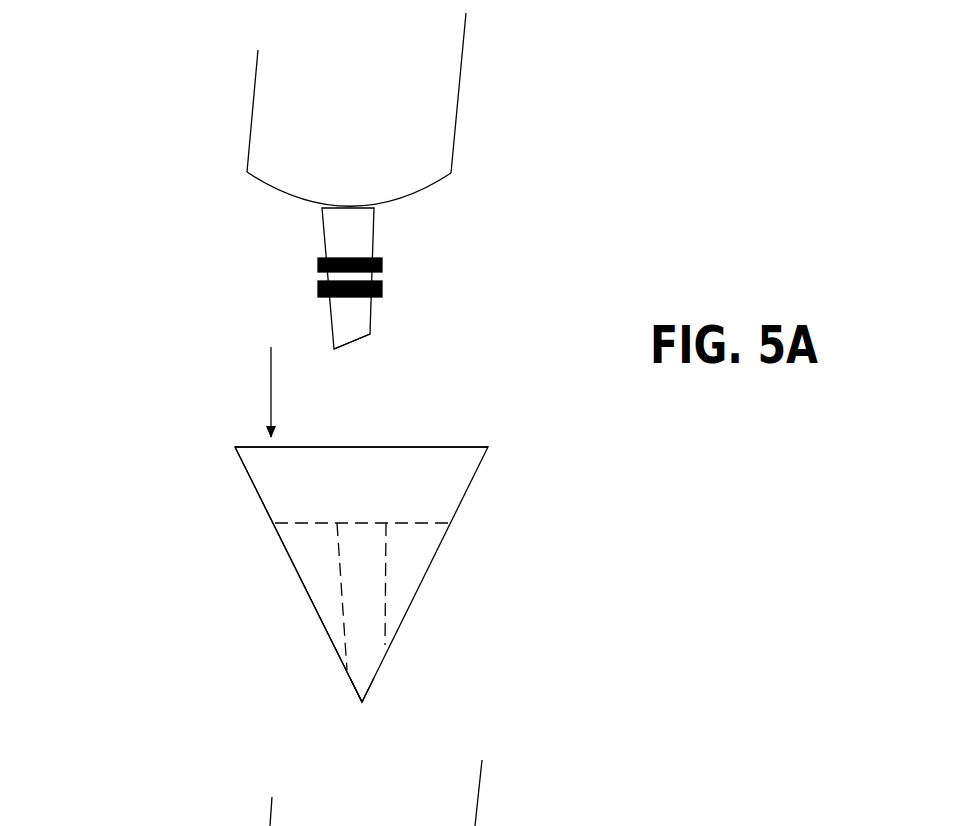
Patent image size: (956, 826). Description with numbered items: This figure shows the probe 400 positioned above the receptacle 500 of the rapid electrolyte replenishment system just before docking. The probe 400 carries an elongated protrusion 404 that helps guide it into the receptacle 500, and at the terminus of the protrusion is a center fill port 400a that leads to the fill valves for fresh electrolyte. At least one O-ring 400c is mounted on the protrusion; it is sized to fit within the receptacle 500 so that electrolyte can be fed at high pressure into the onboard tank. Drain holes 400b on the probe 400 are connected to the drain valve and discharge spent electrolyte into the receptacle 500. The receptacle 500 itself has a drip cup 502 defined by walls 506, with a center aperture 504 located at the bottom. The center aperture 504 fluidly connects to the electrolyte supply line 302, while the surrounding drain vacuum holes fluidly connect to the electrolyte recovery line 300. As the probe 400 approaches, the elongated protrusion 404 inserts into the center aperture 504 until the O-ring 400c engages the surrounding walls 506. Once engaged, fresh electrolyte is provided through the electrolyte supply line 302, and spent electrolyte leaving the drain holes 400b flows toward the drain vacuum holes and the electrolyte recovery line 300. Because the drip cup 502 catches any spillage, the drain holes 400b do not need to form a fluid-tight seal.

The probe 400 is at (508, 96).
The center fill port 400a is at (356, 341).
The drain holes 400b is at (432, 185).
The O-ring 400c is at (305, 277).
The elongated protrusion 404 is at (310, 229).
The receptacle 500 is at (188, 512).
The drip cup 502 is at (424, 477).
The center aperture 504 is at (360, 594).
The walls 506 is at (242, 463).
The electrolyte recovery line 300 is at (445, 537).
The electrolyte supply line 302 is at (369, 690).